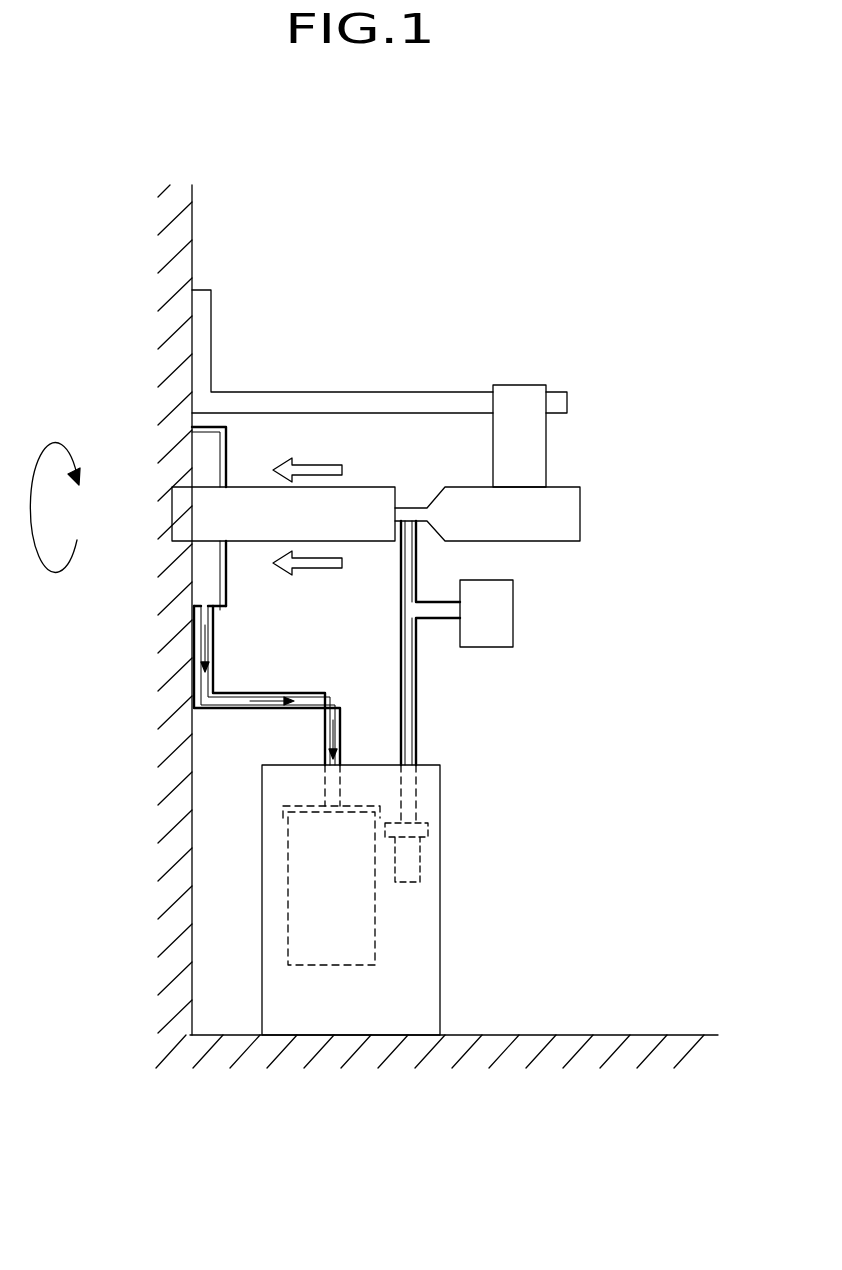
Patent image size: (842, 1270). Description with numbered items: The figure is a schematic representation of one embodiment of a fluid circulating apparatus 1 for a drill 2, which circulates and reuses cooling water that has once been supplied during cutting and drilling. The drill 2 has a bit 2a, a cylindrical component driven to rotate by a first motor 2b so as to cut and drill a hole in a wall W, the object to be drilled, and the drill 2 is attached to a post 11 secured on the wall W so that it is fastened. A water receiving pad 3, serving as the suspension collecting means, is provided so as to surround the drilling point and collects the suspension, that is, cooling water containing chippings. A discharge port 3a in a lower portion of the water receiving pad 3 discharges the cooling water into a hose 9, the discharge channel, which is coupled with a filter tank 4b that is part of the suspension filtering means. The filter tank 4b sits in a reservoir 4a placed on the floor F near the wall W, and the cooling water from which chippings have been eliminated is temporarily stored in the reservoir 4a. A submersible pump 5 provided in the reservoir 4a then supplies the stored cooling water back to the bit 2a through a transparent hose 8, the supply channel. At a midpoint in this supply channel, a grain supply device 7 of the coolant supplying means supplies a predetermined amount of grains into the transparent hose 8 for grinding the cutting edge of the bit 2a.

The fluid circulating apparatus 1 is at (672, 390).
The drill 2 is at (447, 484).
The bit 2a is at (382, 497).
The first motor 2b is at (528, 513).
The water receiving pad 3 is at (205, 563).
The discharge port 3a is at (203, 604).
The reservoir 4a is at (418, 955).
The filter tank 4b is at (303, 907).
The submersible pump 5 is at (407, 863).
The grain supply device 7 is at (505, 617).
The transparent hose 8 is at (417, 715).
The hose 9 is at (228, 700).
The post 11 is at (393, 405).
The wall W is at (163, 610).
The floor F is at (437, 1068).